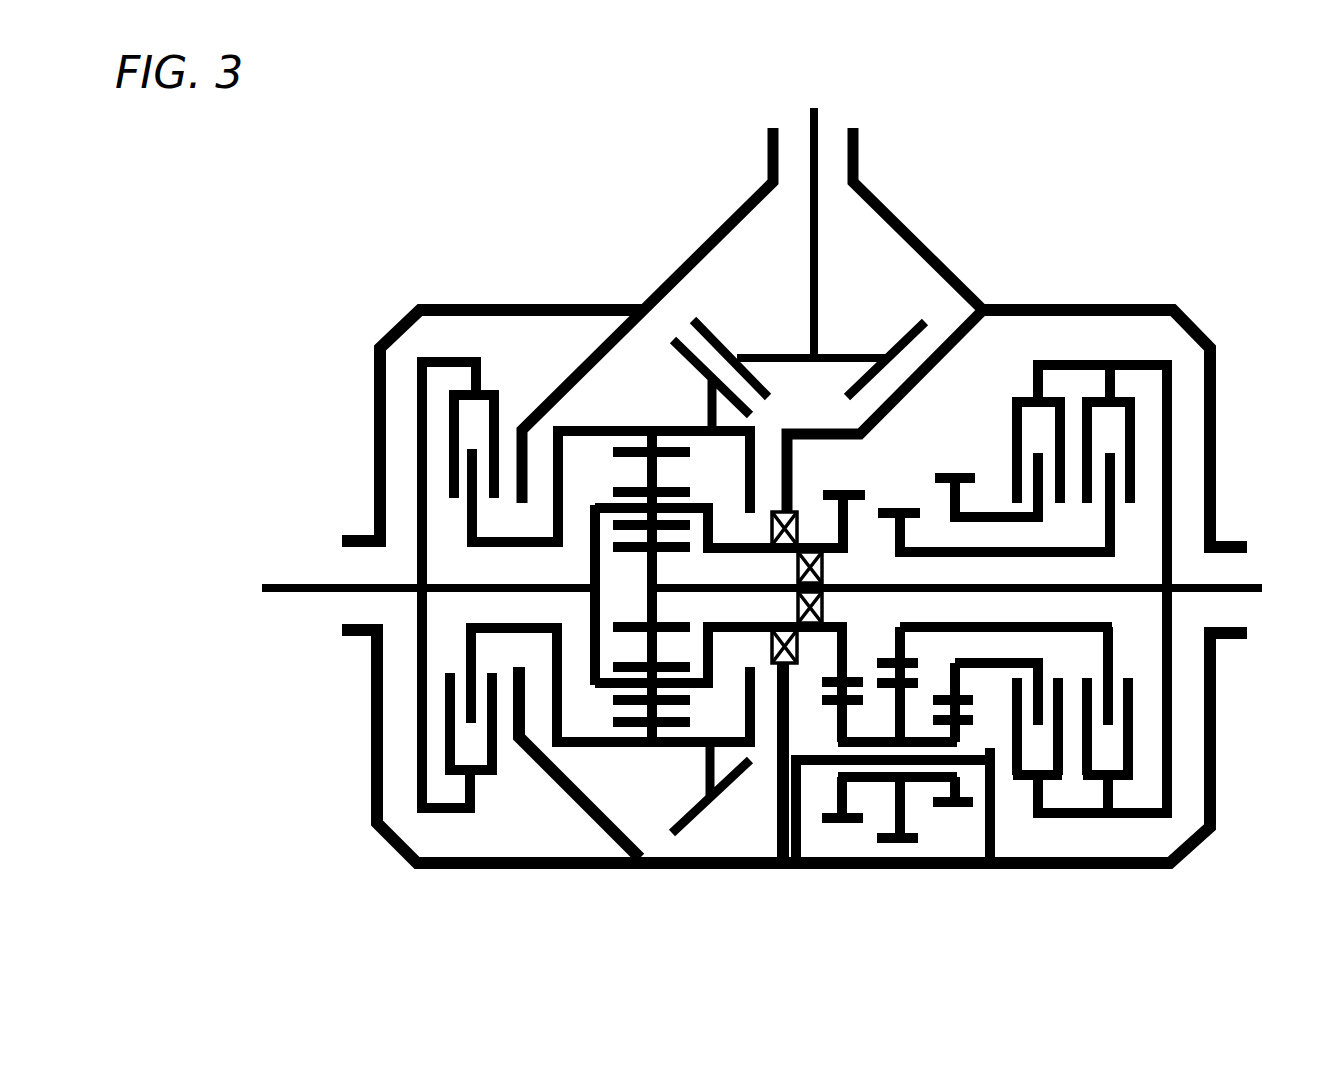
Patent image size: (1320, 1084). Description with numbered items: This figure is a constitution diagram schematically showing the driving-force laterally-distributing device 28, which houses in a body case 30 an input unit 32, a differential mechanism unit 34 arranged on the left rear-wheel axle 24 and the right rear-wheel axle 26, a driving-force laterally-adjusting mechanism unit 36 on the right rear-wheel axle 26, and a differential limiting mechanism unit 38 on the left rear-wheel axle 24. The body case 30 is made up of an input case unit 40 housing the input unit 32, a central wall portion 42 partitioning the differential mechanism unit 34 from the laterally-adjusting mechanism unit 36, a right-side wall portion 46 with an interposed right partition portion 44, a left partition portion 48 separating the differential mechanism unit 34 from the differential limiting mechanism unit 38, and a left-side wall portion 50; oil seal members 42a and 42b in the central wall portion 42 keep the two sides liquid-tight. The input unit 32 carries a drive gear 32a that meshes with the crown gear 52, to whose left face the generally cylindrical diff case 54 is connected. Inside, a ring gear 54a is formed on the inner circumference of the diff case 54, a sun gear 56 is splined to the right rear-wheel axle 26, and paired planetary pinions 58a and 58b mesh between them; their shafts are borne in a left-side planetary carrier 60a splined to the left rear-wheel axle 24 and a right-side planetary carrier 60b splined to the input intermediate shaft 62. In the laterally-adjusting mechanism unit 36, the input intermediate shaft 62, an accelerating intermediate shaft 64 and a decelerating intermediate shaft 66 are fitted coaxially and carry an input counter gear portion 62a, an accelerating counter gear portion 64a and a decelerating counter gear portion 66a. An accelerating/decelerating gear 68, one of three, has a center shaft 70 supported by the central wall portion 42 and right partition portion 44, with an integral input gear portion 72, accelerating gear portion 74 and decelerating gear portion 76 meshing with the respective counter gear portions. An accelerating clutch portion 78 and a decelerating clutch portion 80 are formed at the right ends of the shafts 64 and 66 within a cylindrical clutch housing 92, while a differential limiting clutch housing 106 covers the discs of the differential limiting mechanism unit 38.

The left rear-wheel axle 24 is at (297, 583).
The right rear-wheel axle 26 is at (1258, 590).
The driving-force laterally-distributing device 28 is at (1102, 206).
The body case 30 is at (997, 303).
The input unit 32 is at (850, 247).
The drive gear 32a is at (910, 325).
The differential mechanism unit 34 is at (660, 752).
The driving-force laterally-adjusting mechanism unit 36 is at (1043, 824).
The differential limiting mechanism unit 38 is at (458, 817).
The input case unit 40 is at (768, 152).
The central wall portion 42 is at (777, 833).
The oil seal member 42a is at (770, 647).
The oil seal member 42b is at (826, 607).
The right partition portion 44 is at (997, 832).
The right-side wall portion 46 is at (1217, 735).
The left partition portion 48 is at (568, 800).
The left-side wall portion 50 is at (372, 730).
The crown gear 52 is at (690, 345).
The diff case 54 is at (670, 428).
The ring gear 54a is at (640, 457).
The sun gear 56 is at (648, 606).
The planetary pinion 58a is at (633, 705).
The planetary pinion 58b is at (672, 485).
The left-side planetary carrier 60a is at (592, 610).
The right-side planetary carrier 60b is at (712, 530).
The input intermediate shaft 62 is at (832, 556).
The input counter gear portion 62a is at (845, 487).
The accelerating intermediate shaft 64 is at (945, 557).
The accelerating counter gear portion 64a is at (903, 510).
The decelerating intermediate shaft 66 is at (1003, 520).
The decelerating counter gear portion 66a is at (965, 473).
The accelerating/decelerating gear 68 is at (923, 805).
The center shaft 70 is at (810, 765).
The input gear portion 72 is at (848, 825).
The accelerating gear portion 74 is at (887, 848).
The decelerating gear portion 76 is at (962, 810).
The accelerating clutch portion 78 is at (1142, 355).
The decelerating clutch portion 80 is at (1070, 355).
The clutch housing 92 is at (1178, 508).
The differential limiting clutch housing 106 is at (424, 548).